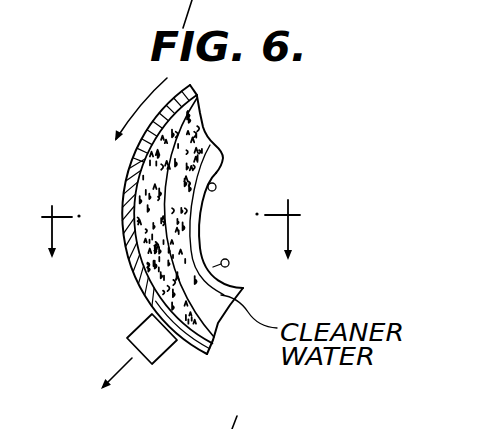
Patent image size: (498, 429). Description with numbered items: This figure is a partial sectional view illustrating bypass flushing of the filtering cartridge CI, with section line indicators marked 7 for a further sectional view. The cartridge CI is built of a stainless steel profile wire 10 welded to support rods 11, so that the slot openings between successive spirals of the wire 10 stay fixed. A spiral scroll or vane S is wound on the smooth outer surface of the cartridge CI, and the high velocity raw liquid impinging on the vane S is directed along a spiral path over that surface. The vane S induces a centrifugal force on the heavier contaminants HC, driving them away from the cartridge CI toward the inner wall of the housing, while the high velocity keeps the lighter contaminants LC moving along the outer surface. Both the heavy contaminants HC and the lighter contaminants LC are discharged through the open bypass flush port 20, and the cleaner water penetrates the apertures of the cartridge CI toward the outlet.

The profile wire 10 is at (214, 184).
The support rods 11 is at (229, 262).
The bypass flush port 20 is at (168, 352).
The spiral scroll or vane S is at (212, 138).
The cartridge CI is at (236, 146).
The heavy contaminants HC is at (140, 165).
The lighter contaminants LC is at (175, 202).
The section line 7- 7 is at (180, 252).